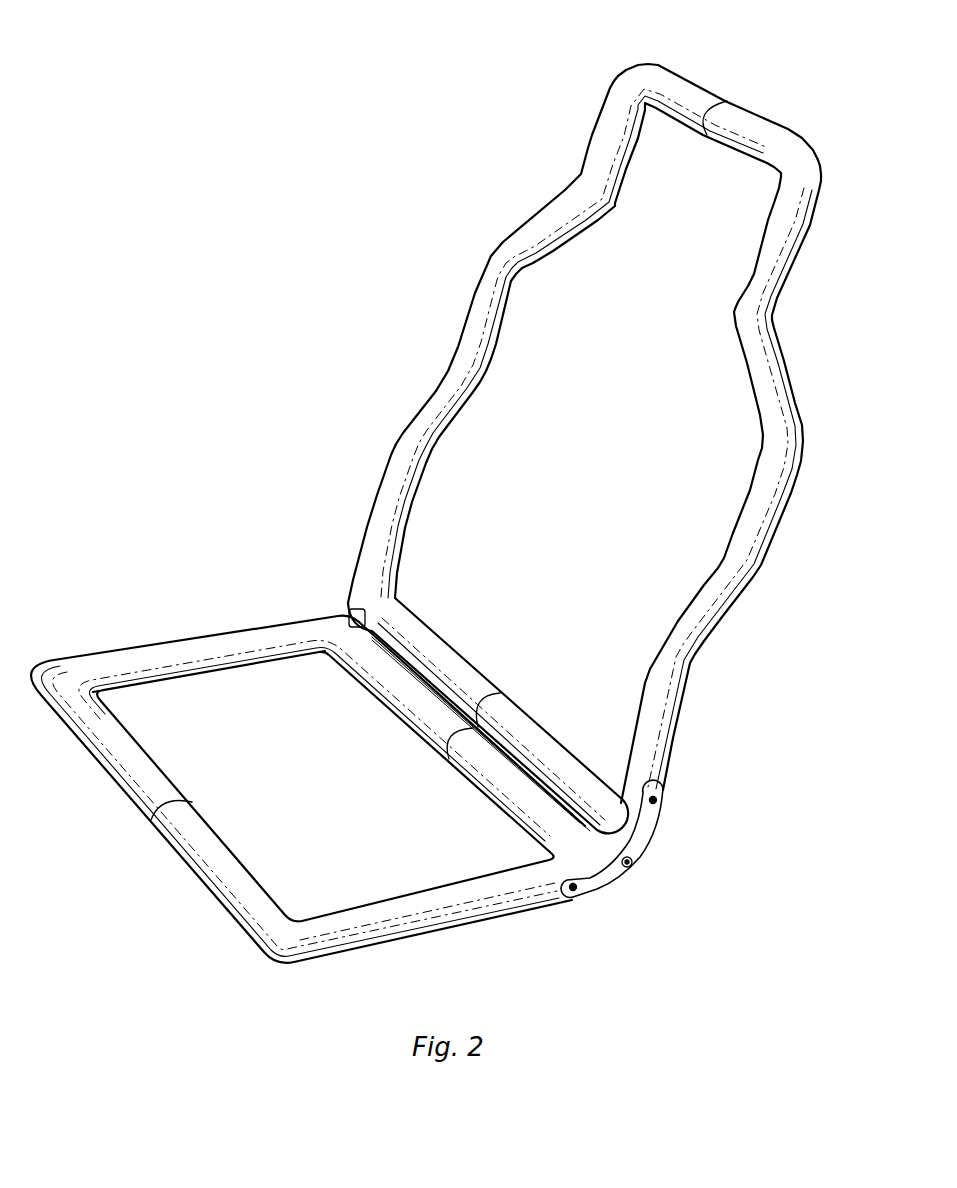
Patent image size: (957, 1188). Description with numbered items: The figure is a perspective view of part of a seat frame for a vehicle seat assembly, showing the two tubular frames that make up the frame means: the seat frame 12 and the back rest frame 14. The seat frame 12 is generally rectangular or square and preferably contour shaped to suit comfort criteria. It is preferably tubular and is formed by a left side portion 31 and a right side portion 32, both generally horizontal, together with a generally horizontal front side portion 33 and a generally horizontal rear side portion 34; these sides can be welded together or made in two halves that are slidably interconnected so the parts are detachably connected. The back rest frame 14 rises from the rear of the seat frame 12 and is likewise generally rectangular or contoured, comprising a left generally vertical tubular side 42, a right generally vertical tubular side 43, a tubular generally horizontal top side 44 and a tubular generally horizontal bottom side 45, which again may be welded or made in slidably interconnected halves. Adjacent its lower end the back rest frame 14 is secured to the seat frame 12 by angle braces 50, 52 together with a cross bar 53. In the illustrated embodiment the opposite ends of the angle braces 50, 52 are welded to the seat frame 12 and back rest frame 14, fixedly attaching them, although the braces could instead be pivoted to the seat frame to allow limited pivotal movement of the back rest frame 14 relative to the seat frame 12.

The seat frame 12 is at (395, 747).
The back rest frame 14 is at (567, 425).
The left side portion 31 is at (137, 650).
The right side portion 32 is at (428, 913).
The front side portion 33 is at (193, 860).
The rear side portion 34 is at (423, 737).
The left vertical side 42 is at (478, 274).
The right vertical side 43 is at (778, 385).
The top side 44 is at (697, 98).
The bottom side 45 is at (497, 697).
The angle brace 50 is at (347, 610).
The angle brace 52 is at (648, 832).
The cross bar 53 is at (396, 645).